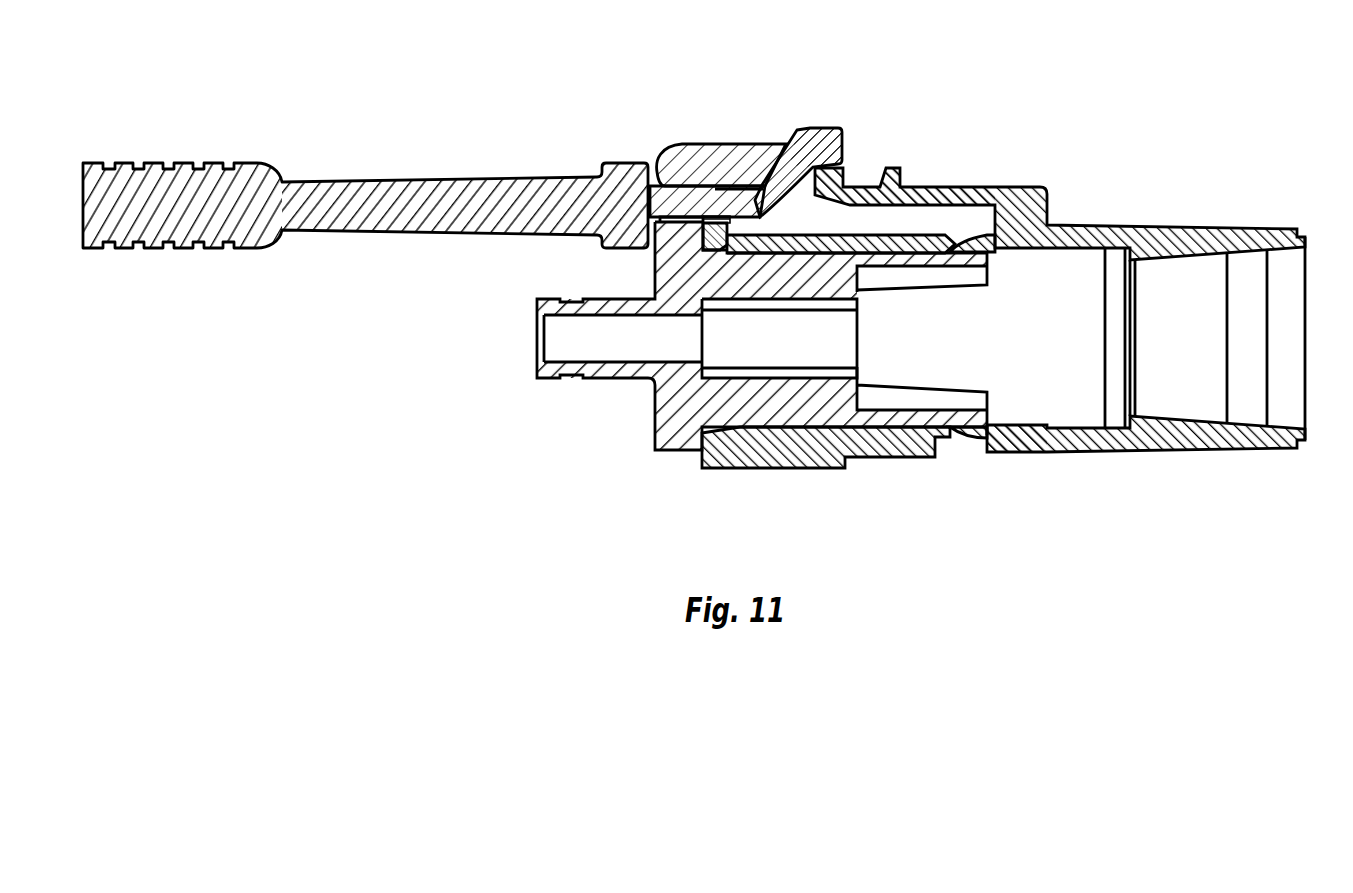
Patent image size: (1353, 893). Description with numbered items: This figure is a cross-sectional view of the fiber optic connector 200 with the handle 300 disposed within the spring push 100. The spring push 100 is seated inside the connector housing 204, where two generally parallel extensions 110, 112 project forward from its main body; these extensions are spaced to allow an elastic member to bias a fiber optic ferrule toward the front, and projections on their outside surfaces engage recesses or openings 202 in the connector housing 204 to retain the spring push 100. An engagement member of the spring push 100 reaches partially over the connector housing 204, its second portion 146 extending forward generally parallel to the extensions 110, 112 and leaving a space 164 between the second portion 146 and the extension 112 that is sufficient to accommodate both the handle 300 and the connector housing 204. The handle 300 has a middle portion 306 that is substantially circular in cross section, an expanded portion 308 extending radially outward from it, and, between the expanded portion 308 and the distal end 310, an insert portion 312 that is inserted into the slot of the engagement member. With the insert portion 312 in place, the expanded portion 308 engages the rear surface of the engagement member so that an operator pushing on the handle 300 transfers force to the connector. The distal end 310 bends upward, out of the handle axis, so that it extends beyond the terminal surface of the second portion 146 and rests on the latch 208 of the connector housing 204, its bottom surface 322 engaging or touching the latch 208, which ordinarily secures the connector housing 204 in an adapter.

The spring push 100 is at (651, 450).
The generally parallel extension 110 is at (947, 410).
The generally parallel extension 112 is at (920, 268).
The second portion 146 is at (733, 144).
The space 164 is at (727, 256).
The fiber optic connector 200 is at (1102, 132).
The recesses or openings 202 is at (979, 441).
The connector housing 204 is at (812, 470).
The latch 208 is at (966, 187).
The handle 300 is at (192, 152).
The middle portion 306 is at (433, 182).
The expanded portion 308 is at (612, 163).
The distal end 310 is at (823, 128).
The insert portion 312 is at (681, 145).
The bottom surface 322 is at (792, 140).